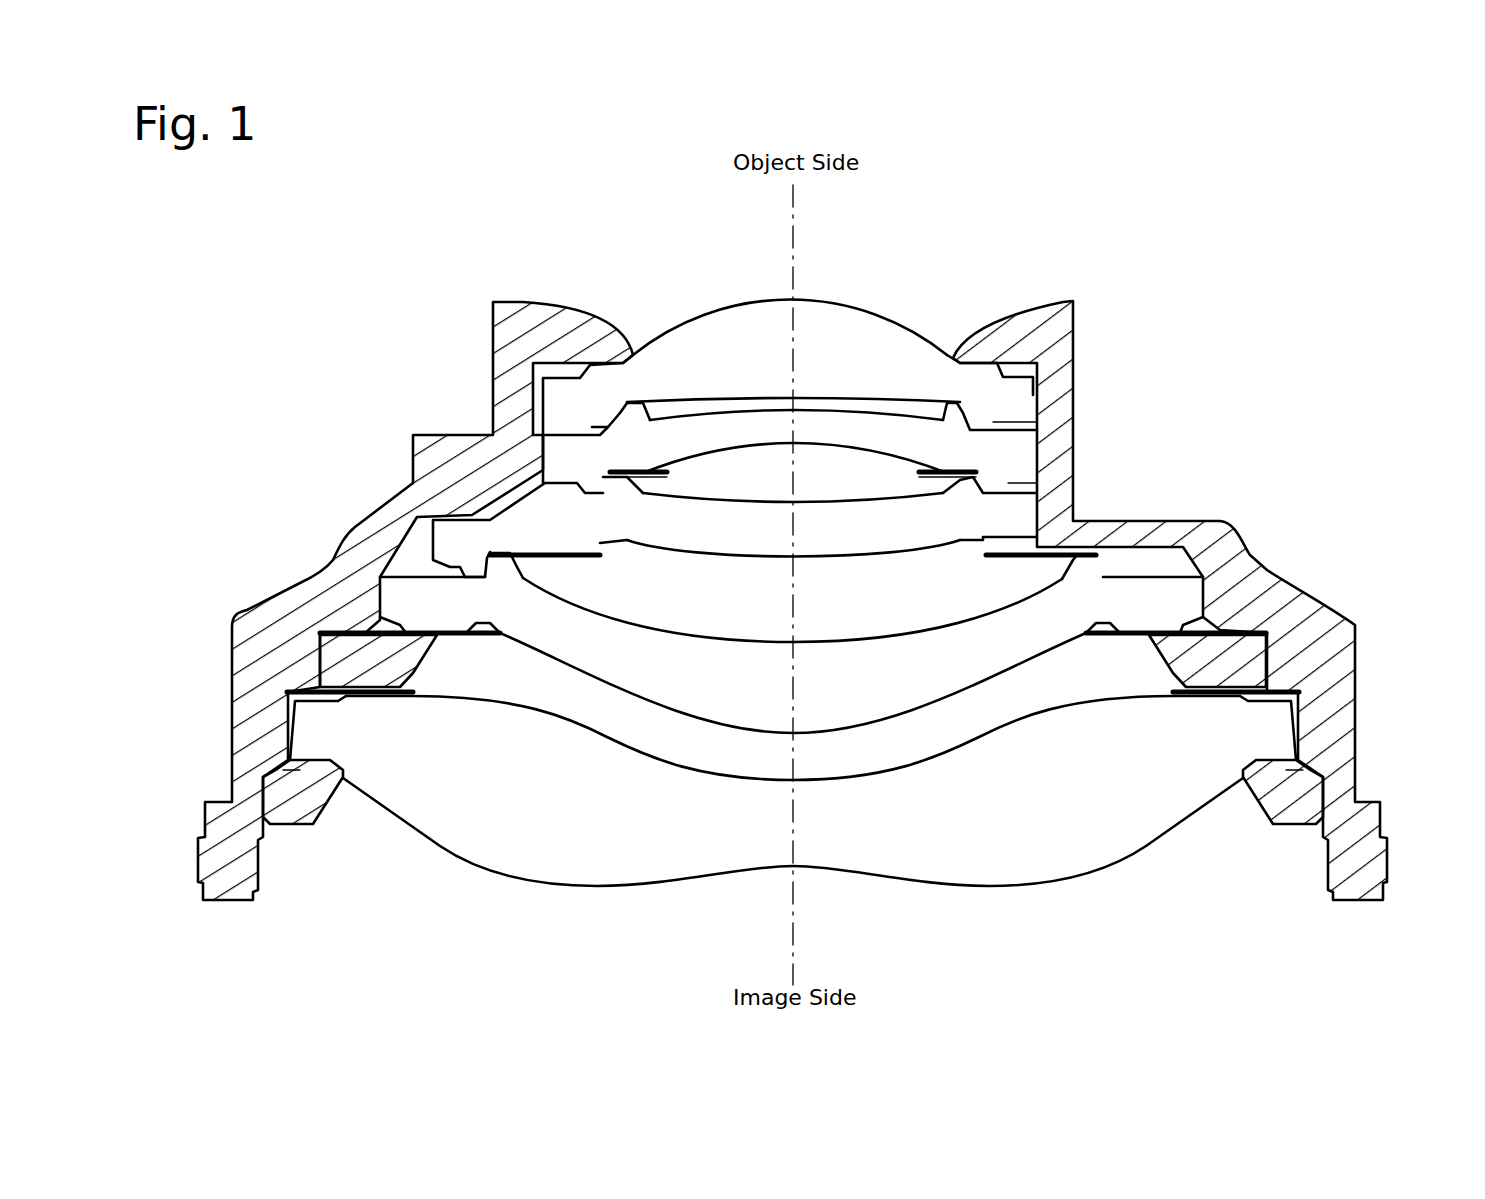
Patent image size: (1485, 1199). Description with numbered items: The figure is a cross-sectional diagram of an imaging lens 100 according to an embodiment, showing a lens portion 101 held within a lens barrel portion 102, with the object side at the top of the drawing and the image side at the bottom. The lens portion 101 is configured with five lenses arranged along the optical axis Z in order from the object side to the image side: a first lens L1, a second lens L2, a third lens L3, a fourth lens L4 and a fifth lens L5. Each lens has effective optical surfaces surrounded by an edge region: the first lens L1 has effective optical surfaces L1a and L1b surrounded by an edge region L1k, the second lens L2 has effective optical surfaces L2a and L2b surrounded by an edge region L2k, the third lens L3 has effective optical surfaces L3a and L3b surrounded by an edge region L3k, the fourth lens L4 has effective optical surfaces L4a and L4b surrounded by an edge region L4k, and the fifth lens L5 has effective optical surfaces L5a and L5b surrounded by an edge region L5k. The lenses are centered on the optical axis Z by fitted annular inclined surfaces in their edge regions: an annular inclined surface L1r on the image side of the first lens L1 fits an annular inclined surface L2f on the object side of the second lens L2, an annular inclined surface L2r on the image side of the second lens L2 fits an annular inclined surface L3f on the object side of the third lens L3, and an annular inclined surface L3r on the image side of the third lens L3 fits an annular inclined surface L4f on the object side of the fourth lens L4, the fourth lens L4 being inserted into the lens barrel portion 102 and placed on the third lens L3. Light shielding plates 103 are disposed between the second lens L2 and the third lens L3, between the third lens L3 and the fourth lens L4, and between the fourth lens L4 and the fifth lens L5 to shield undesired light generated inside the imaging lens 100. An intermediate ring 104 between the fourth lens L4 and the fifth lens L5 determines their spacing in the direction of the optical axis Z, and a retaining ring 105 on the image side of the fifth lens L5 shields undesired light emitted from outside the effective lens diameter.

The imaging lens 100 is at (507, 167).
The lens portion 101 is at (684, 264).
The lens barrel portion 102 is at (512, 300).
The light shielding plate 103 is at (573, 552).
The intermediate ring 104 is at (337, 663).
The retaining ring 105 is at (287, 807).
The optical axis Z is at (812, 217).
The first lens L1 is at (826, 341).
The effective optical surface L1a is at (865, 300).
The effective optical surface L1b is at (776, 404).
The edge region L1k is at (985, 392).
The annular inclined surface L1r is at (950, 403).
The second lens L2 is at (764, 437).
The effective optical surface L2a is at (805, 402).
The effective optical surface L2b is at (805, 443).
The edge region L2k is at (570, 455).
The annular inclined surface L2r is at (960, 467).
The annular inclined surface L2f is at (997, 420).
The third lens L3 is at (714, 516).
The effective optical surface L3a is at (783, 502).
The effective optical surface L3b is at (806, 557).
The edge region L3k is at (462, 545).
The annular inclined surface L3r is at (520, 580).
The annular inclined surface L3f is at (1000, 480).
The fourth lens L4 is at (795, 642).
The effective optical surface L4a is at (808, 641).
The effective optical surface L4b is at (810, 732).
The annular inclined surface L4f is at (460, 577).
The edge region L4k is at (1157, 600).
The fifth lens L5 is at (861, 799).
The effective optical surface L5a is at (786, 780).
The effective optical surface L5b is at (830, 867).
The edge region L5k is at (1270, 735).